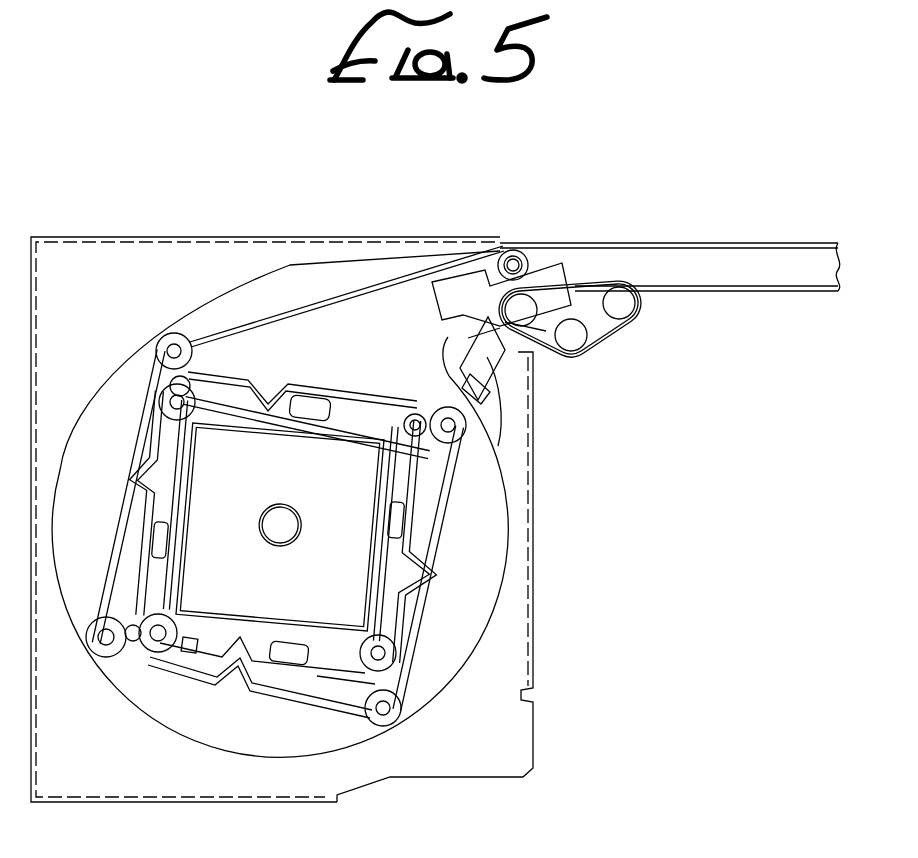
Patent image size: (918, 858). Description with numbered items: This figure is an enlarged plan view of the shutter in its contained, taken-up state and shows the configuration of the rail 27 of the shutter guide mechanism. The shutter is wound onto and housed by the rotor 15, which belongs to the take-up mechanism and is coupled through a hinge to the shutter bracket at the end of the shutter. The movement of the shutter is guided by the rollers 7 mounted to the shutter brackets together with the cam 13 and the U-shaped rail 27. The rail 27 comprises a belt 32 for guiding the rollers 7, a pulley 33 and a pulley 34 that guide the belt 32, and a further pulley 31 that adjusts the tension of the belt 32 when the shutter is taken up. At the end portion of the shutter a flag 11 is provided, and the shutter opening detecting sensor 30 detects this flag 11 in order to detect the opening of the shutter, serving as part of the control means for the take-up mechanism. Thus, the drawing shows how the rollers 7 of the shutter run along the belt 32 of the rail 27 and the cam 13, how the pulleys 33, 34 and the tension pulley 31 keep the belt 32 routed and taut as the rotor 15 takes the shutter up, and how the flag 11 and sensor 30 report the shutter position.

The rollers 7 is at (303, 275).
The flag 11 is at (543, 278).
The cam 13 is at (182, 263).
The rotor 15 is at (408, 580).
The rail 27 is at (775, 243).
The shutter opening detecting sensor 30 is at (488, 392).
The pulley 31 is at (573, 336).
The belt 32 is at (622, 322).
The pulley 33 is at (619, 302).
The pulley 34 is at (540, 328).